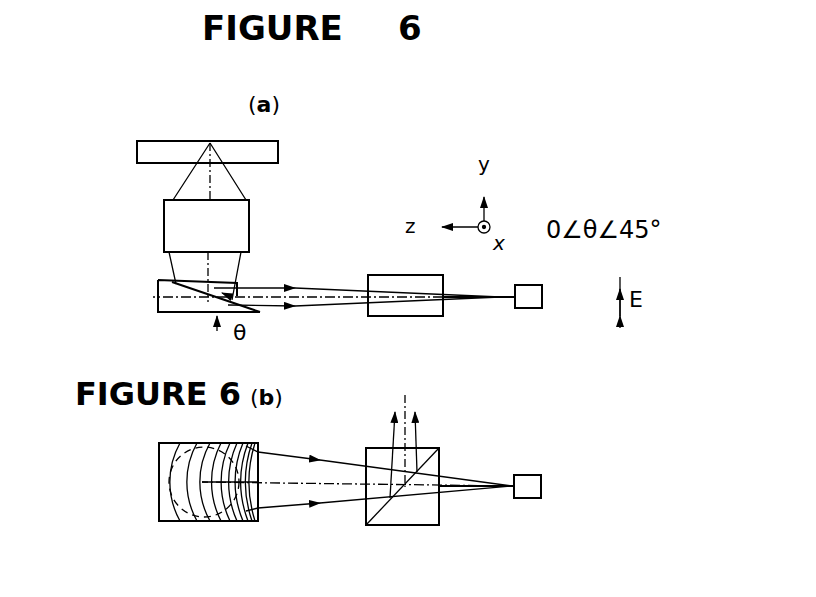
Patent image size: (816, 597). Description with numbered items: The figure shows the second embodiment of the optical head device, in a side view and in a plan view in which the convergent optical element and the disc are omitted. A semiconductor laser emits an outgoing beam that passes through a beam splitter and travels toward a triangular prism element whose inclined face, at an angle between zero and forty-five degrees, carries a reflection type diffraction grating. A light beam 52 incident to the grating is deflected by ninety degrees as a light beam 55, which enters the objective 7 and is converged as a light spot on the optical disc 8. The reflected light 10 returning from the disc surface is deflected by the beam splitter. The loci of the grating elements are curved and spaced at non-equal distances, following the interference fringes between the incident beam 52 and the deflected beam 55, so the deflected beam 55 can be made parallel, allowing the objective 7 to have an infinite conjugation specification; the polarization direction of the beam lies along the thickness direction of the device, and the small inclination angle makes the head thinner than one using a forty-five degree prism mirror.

The optical element 7 is at (250, 223).
The optical data recording medium 8 is at (280, 154).
The reflected light 10 is at (423, 430).
The light beam incident to the grating 52 is at (313, 308).
The light beam deflected by the grating 55 is at (169, 263).